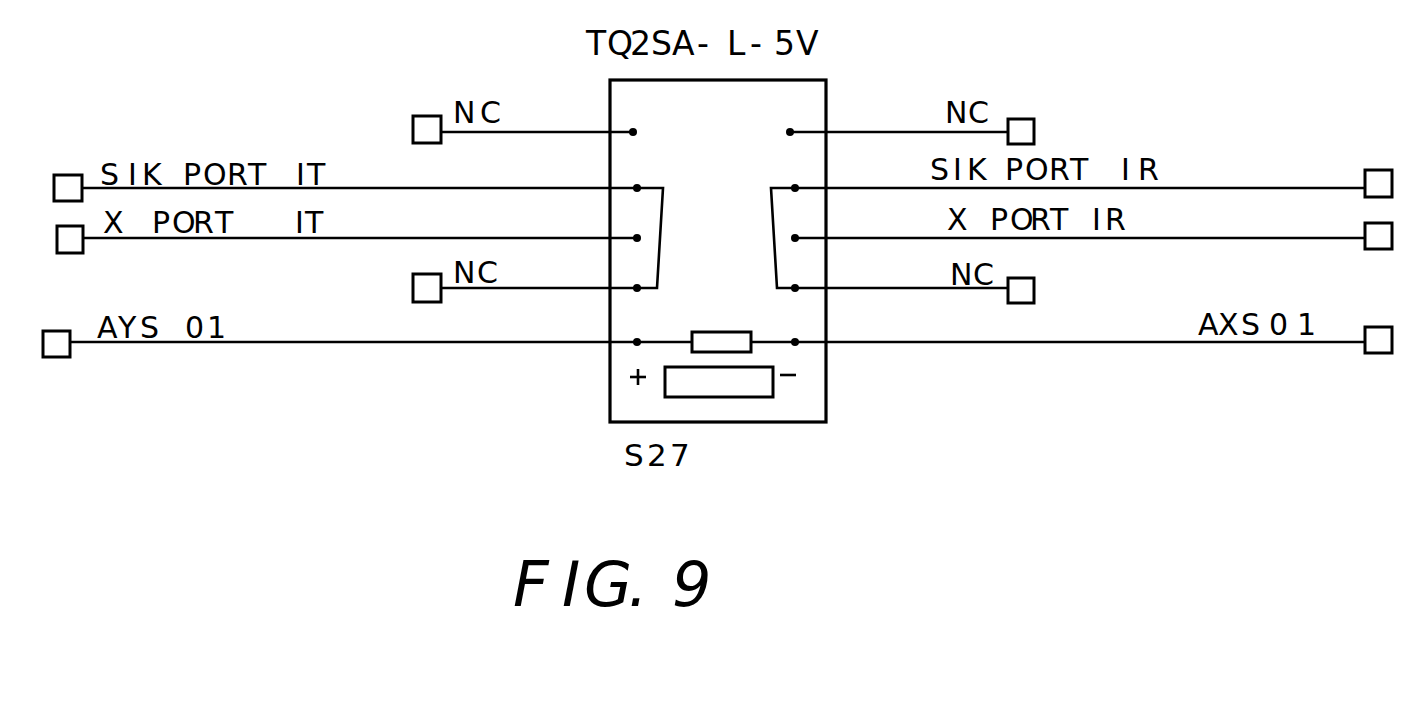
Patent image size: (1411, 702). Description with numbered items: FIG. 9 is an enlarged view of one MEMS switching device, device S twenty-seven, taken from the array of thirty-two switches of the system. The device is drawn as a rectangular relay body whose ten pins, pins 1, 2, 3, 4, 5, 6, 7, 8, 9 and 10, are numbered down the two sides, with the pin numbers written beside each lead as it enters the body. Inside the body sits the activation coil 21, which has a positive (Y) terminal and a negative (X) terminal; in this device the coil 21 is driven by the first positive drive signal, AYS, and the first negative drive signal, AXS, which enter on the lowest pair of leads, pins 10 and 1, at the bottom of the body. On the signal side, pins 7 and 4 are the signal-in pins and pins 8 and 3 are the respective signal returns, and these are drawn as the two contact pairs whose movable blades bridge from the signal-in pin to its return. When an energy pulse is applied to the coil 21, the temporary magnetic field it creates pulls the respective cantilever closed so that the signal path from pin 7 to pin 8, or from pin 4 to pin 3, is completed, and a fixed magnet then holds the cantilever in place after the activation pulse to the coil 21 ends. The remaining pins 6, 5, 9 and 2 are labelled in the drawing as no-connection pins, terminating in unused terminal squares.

The activation coil 21 is at (720, 330).
The relay pin 1 is at (840, 374).
The relay pin 2 is at (912, 302).
The signal return pin 3 is at (1091, 248).
The signal-in pin 4 is at (1091, 197).
The relay pin 5 is at (910, 144).
The relay pin 6 is at (525, 144).
The signal-in pin 7 is at (347, 201).
The signal return pin 8 is at (349, 250).
The relay pin 9 is at (527, 300).
The relay pin 10 is at (565, 350).